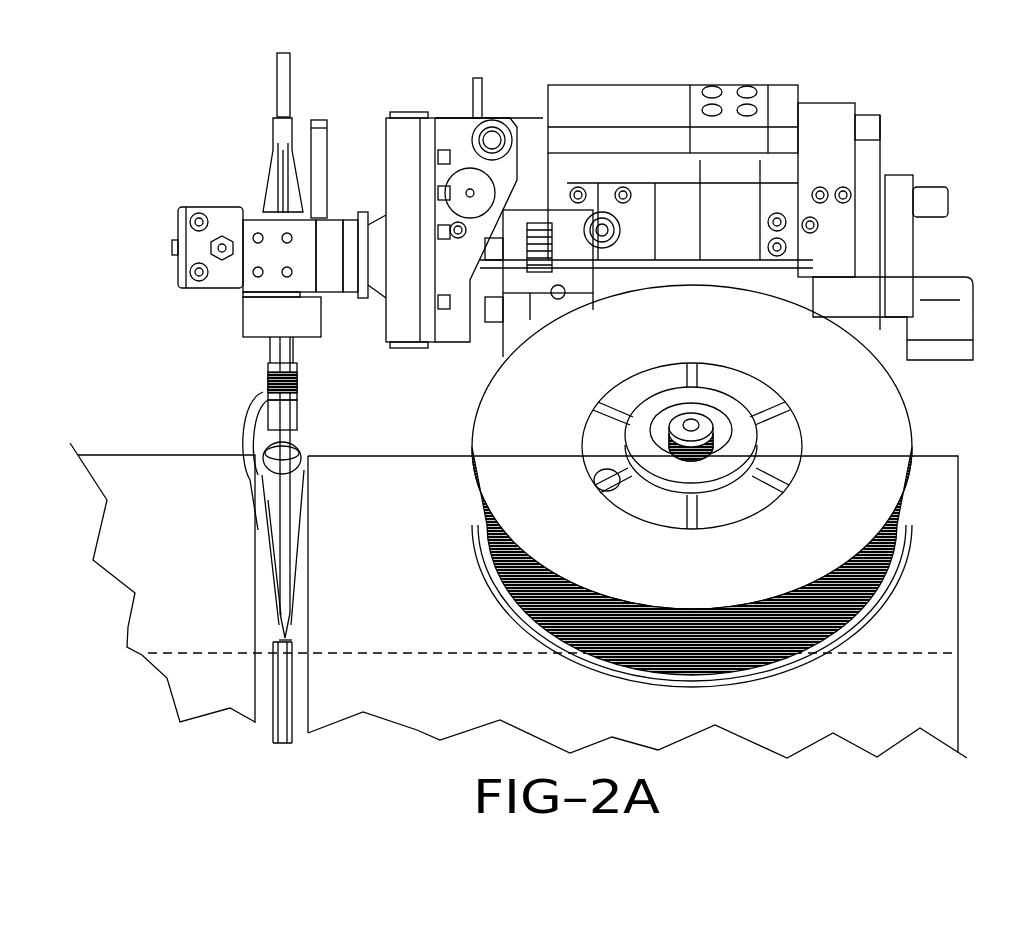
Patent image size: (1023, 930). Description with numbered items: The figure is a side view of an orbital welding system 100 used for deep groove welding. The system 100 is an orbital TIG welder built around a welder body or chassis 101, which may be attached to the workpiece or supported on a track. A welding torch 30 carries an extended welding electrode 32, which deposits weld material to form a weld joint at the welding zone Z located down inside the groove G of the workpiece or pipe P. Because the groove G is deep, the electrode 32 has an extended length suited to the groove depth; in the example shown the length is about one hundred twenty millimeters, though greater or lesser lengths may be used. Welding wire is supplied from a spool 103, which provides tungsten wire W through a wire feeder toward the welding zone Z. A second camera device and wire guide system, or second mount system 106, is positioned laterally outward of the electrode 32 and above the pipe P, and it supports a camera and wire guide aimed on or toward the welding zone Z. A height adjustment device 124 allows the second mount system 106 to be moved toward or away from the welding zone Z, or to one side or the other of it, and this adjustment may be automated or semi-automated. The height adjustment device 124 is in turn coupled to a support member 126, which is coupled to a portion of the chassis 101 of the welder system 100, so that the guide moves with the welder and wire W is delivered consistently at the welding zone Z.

The welding system 100 is at (150, 103).
The chassis 101 is at (402, 117).
The spool 103 is at (875, 423).
The second mount system 106 is at (245, 420).
The height adjustment device 124 is at (273, 273).
The support member 126 is at (335, 217).
The welding torch 30 is at (237, 190).
The welding electrode 32 is at (282, 570).
The pipe P is at (132, 535).
The groove G is at (257, 682).
The welding zone Z is at (296, 630).
The tungsten wire W is at (890, 567).